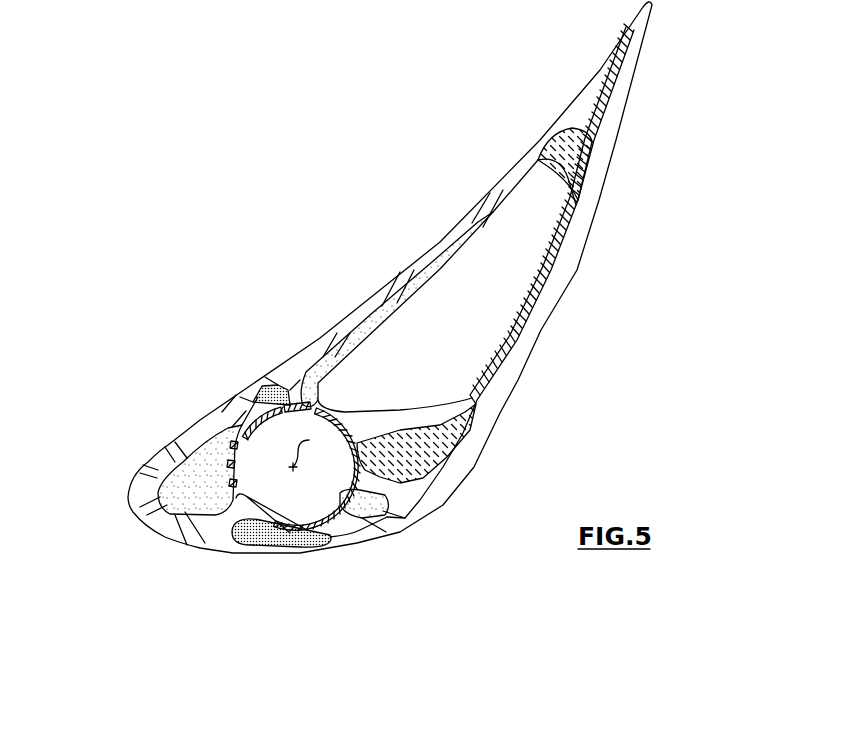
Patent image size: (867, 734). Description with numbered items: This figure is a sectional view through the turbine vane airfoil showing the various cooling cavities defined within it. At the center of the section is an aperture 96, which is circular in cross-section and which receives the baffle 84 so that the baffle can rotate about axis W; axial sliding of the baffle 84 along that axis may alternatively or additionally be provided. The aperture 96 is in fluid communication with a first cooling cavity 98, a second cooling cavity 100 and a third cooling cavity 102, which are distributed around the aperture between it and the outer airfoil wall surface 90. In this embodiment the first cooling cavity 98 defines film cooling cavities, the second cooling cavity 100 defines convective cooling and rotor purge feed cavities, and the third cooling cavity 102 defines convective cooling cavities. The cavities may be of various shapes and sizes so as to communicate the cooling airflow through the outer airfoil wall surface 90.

The baffle 84 is at (237, 505).
The outer airfoil wall surface 90 is at (473, 473).
The aperture 96 is at (325, 509).
The first cooling cavity 98 is at (205, 463).
The second cooling cavity 100 is at (268, 392).
The third cooling cavity 102 is at (462, 428).